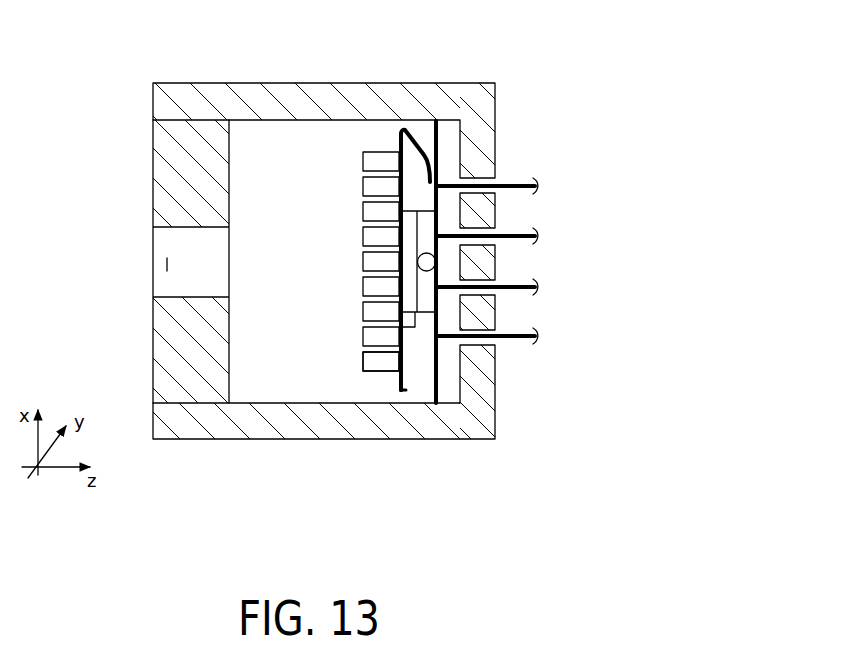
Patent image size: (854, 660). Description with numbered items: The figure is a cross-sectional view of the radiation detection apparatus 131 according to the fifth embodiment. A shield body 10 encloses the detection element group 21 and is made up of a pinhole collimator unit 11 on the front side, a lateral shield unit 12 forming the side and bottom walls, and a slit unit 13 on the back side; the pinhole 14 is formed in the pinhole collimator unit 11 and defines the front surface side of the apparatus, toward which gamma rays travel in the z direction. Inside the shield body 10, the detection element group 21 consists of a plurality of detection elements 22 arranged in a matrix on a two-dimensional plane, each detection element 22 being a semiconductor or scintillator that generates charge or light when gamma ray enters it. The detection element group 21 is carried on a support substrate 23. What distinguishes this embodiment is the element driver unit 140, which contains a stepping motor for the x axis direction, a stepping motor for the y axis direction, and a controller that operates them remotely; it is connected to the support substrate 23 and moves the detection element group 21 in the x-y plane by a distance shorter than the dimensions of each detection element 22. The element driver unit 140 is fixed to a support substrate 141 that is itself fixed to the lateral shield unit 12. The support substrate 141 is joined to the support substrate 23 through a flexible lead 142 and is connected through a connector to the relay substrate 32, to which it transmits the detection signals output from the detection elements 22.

The shield body 10 is at (255, 80).
The pinhole collimator unit 11 is at (153, 200).
The lateral shield unit 12 is at (163, 440).
The slit unit 13 is at (497, 393).
The pinhole 14 is at (167, 265).
The detection element group 21 is at (372, 140).
The detection element 22 is at (367, 373).
The support substrate 23 is at (403, 391).
The relay substrate 32 is at (511, 182).
The radiation detection apparatus 131 is at (390, 478).
The element driver unit 140 is at (420, 315).
The support substrate 141 is at (439, 143).
The flexible lead 142 is at (415, 145).